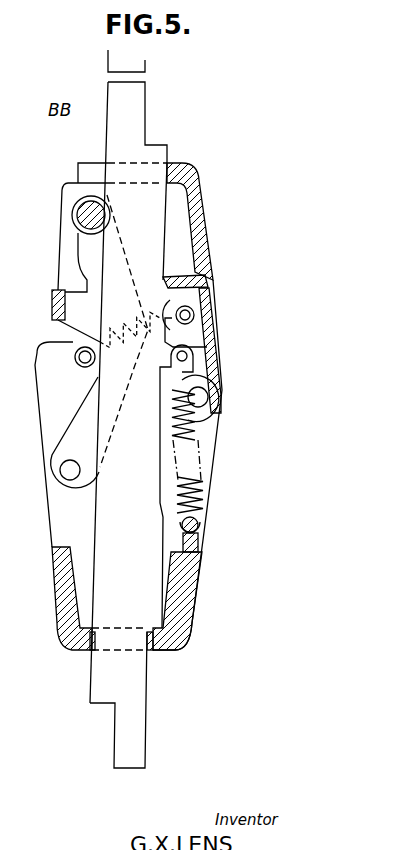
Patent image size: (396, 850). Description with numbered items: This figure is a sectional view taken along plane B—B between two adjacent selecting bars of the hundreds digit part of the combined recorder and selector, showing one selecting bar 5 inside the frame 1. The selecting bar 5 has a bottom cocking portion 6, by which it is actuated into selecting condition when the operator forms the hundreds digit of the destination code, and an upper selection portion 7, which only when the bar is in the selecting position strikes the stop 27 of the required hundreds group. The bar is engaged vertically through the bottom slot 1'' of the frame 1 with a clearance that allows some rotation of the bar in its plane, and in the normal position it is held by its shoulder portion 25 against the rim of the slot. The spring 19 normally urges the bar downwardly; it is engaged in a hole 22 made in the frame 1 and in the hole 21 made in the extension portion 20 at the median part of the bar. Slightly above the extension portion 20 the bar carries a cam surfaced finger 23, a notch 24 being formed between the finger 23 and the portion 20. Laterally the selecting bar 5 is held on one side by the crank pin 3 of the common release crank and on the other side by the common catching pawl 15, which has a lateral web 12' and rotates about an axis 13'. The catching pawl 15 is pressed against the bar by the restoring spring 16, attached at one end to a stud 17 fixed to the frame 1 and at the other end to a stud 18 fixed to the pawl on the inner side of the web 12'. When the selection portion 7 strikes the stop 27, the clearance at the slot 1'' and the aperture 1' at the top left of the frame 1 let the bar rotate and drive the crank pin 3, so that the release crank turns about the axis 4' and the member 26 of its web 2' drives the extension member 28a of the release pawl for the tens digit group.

The stop 27 is at (133, 64).
The upper selection portion 7 is at (127, 105).
The frame 1 is at (191, 406).
The aperture 1' is at (103, 172).
The web 2' is at (68, 262).
The crank pin 3 is at (78, 213).
The stop 28a is at (52, 303).
The cam surfaced finger 23 is at (203, 273).
The catching pawl 15 is at (215, 327).
The stud 18 is at (192, 308).
The notch 24 is at (172, 333).
The restoring spring 16 is at (148, 317).
The extension portion 20 is at (168, 357).
The member 26 is at (83, 323).
The stud 17 is at (76, 360).
The axis 4' is at (60, 433).
The selecting bar 5 is at (110, 526).
The hole 21 is at (190, 360).
The lateral web 12' is at (212, 413).
The axis 13' is at (217, 408).
The spring 19 is at (190, 488).
The hole 22 is at (195, 540).
The shoulder portion 25 is at (147, 620).
The bottom slot 1'' is at (106, 652).
The bottom cocking portion 6 is at (135, 732).